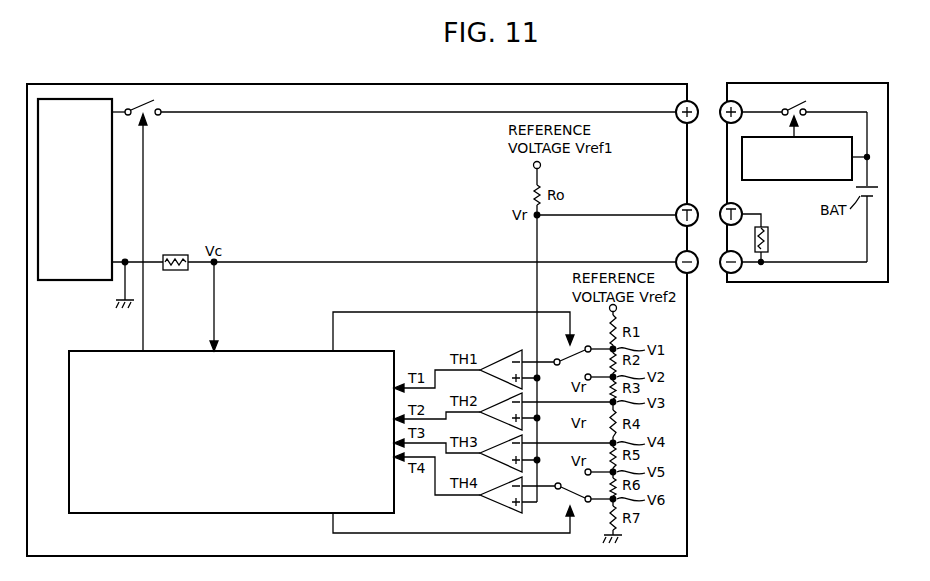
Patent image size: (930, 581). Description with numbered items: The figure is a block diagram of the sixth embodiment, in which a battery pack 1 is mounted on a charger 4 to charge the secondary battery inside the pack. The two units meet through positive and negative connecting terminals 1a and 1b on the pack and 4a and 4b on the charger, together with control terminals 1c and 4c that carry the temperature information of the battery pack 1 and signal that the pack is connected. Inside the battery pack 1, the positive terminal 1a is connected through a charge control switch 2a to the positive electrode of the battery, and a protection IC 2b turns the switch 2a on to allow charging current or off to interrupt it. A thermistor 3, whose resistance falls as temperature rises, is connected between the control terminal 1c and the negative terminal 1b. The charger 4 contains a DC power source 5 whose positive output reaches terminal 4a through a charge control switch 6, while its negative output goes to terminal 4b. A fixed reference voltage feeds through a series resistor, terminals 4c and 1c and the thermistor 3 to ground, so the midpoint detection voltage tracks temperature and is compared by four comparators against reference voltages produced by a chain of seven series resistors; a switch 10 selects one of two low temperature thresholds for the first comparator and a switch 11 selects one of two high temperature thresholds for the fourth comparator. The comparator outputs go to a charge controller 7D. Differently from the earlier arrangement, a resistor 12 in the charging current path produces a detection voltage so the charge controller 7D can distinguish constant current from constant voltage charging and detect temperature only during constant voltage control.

The battery pack 1 is at (790, 83).
The positive connecting terminal 1a is at (722, 103).
The negative connecting terminal 1b is at (722, 273).
The control terminal 1c is at (722, 205).
The charge control switch 2a is at (806, 114).
The protection IC 2b is at (778, 181).
The thermistor 3 is at (770, 233).
The charger 4 is at (590, 83).
The positive terminal 4a is at (679, 122).
The negative terminal 4b is at (677, 259).
The control terminal 4c is at (677, 218).
The DC power source 5 is at (71, 281).
The charge control switch 6 is at (153, 117).
The charge controller 7D is at (176, 351).
The switch 10 is at (560, 357).
The switch 11 is at (580, 505).
The resistor 12 is at (177, 255).